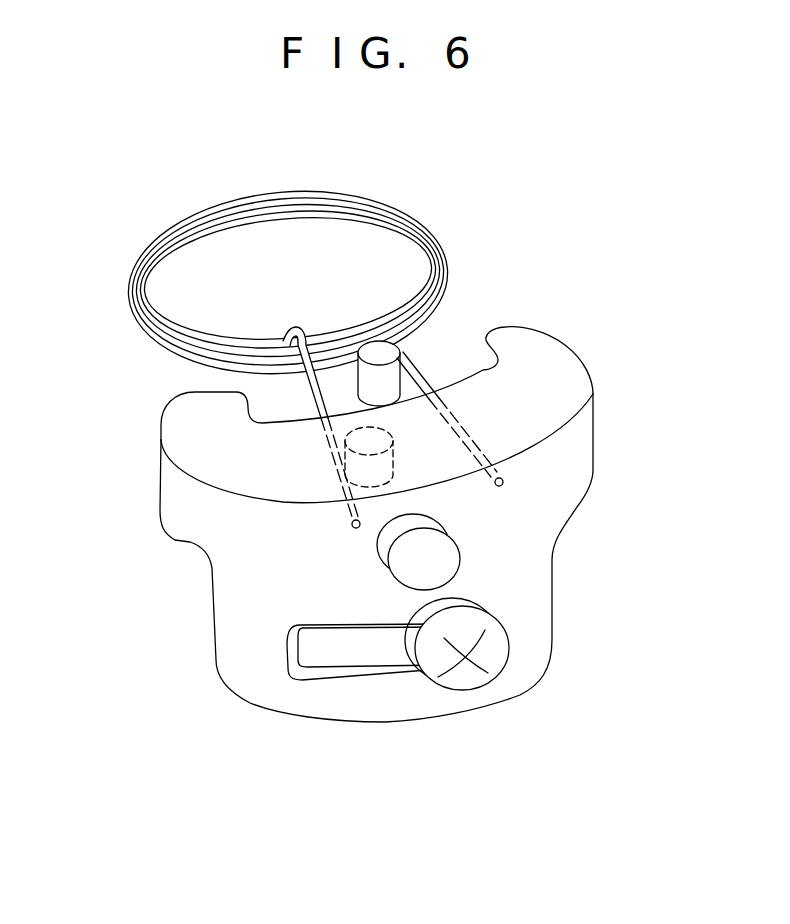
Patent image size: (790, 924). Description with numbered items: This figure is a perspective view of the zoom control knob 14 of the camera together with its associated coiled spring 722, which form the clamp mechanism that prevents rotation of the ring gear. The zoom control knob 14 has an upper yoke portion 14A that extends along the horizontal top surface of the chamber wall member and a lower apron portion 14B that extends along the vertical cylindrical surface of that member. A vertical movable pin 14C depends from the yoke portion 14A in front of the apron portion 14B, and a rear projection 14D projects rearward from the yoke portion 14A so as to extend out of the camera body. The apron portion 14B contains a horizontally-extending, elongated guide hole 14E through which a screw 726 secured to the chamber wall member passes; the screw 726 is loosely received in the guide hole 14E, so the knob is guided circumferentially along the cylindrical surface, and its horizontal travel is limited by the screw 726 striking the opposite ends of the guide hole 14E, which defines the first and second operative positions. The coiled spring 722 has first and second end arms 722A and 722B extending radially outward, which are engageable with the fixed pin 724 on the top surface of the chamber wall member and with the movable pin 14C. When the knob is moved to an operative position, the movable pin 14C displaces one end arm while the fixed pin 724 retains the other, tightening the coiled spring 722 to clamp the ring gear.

The coiled spring 722 is at (365, 196).
The first end arm 722A is at (303, 392).
The second end arm 722B is at (419, 396).
The fixed pin 724 is at (392, 353).
The zoom control knob 14 is at (433, 553).
The upper yoke portion 14A is at (572, 372).
The lower apron portion 14B is at (525, 592).
The movable pin 14C is at (388, 462).
The rear projection 14D is at (397, 572).
The guide hole 14E is at (338, 667).
The screw 726 is at (498, 655).